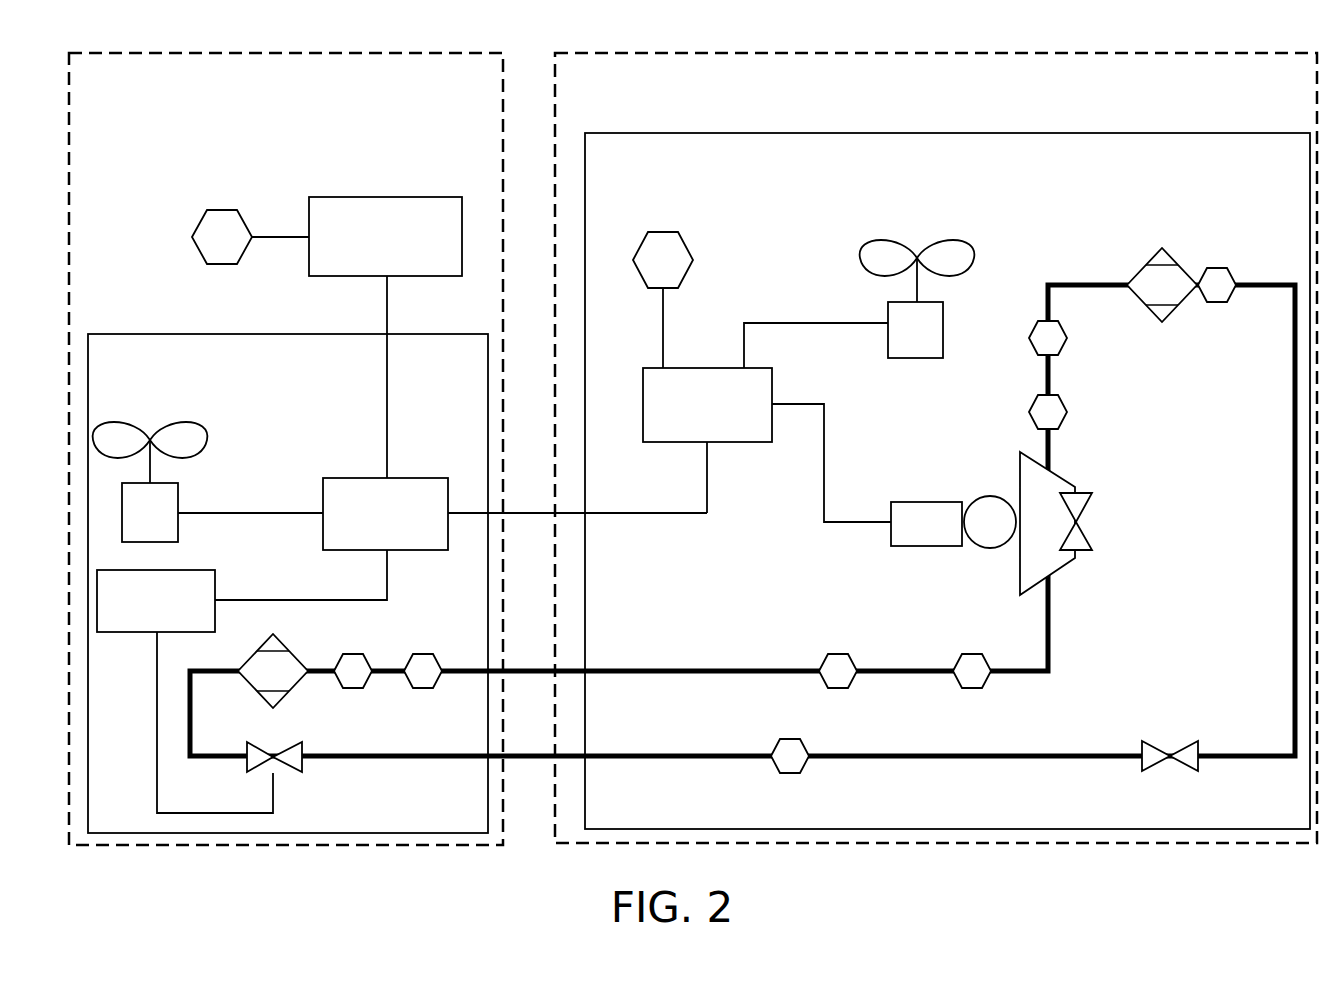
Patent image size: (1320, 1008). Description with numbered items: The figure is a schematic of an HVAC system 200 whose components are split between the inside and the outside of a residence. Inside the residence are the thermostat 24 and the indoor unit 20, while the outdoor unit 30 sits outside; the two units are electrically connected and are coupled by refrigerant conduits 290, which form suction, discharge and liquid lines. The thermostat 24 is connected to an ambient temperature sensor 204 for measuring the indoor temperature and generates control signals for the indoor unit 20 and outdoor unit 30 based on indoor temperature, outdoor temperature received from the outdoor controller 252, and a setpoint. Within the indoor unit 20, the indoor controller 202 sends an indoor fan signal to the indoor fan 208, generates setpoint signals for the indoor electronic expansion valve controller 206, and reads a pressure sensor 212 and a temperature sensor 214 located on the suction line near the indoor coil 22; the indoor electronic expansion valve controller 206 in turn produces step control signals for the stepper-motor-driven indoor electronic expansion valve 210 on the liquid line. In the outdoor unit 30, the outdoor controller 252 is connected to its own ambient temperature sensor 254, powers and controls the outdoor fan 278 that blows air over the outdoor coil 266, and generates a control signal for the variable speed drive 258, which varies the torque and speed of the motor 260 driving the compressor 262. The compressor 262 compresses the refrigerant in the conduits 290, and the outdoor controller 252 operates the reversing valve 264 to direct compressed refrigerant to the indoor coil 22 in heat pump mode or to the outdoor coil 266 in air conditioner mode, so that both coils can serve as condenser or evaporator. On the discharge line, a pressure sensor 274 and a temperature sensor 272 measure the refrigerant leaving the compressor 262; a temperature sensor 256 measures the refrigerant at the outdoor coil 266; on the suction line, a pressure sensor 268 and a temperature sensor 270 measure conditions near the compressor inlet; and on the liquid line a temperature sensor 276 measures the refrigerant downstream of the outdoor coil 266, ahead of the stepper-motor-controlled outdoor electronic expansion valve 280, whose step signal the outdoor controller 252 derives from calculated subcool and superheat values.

The HVAC system 200 is at (1200, 37).
The indoor unit 20 is at (95, 337).
The outdoor unit 30 is at (752, 137).
The thermostat 24 is at (415, 197).
The ambient temperature sensor 204 is at (199, 244).
The indoor controller 202 is at (392, 480).
The indoor fan 208 is at (175, 525).
The indoor electronic expansion valve controller 206 is at (212, 593).
The indoor coil 22 is at (236, 670).
The pressure sensor 212 is at (360, 686).
The temperature sensor 214 is at (418, 657).
The indoor electronic expansion valve 210 is at (255, 767).
The ambient temperature sensor 254 is at (688, 257).
The outdoor controller 252 is at (680, 441).
The outdoor fan 278 is at (899, 357).
The variable speed drive 258 is at (912, 546).
The motor 260 is at (1003, 547).
The compressor 262 is at (1060, 488).
The reversing valve 264 is at (1080, 551).
The pressure sensor 274 is at (1043, 334).
The temperature sensor 272 is at (1043, 405).
The outdoor coil 266 is at (1164, 312).
The temperature sensor 256 is at (1215, 301).
The conduits 290 is at (1052, 645).
The pressure sensor 268 is at (845, 660).
The temperature sensor 270 is at (975, 660).
The temperature sensor 276 is at (786, 746).
The outdoor electronic expansion valve 280 is at (1150, 748).